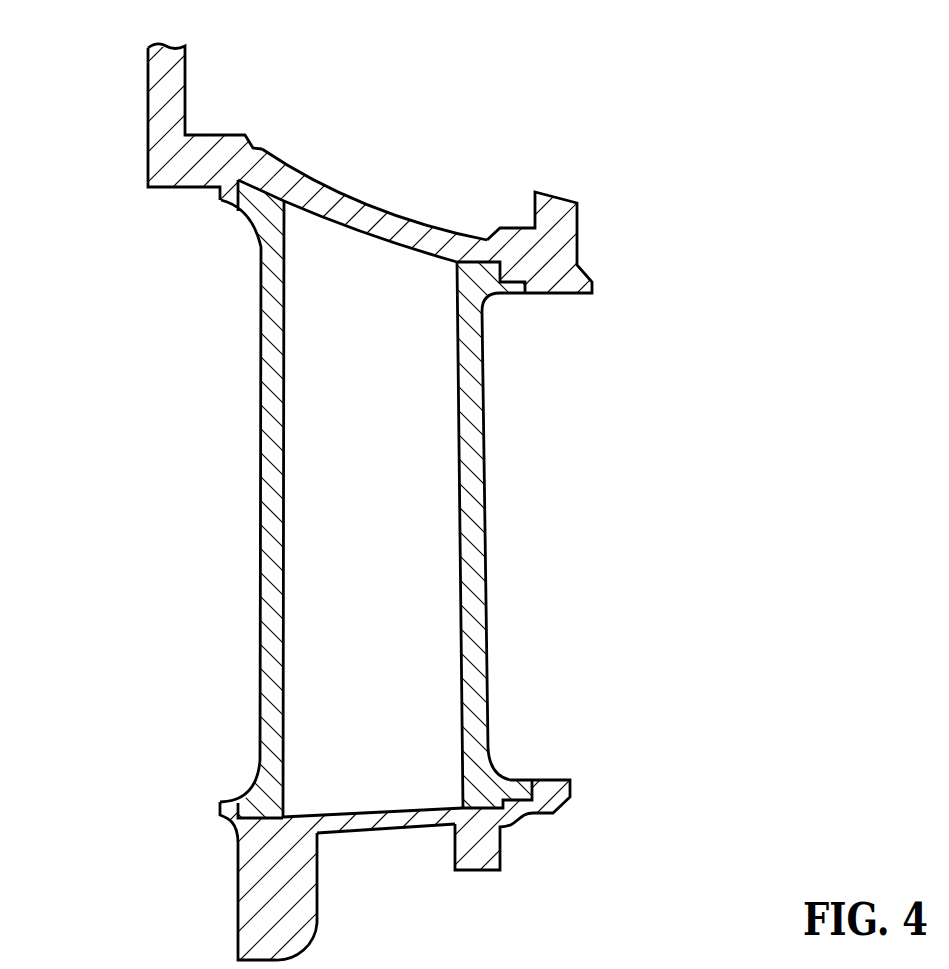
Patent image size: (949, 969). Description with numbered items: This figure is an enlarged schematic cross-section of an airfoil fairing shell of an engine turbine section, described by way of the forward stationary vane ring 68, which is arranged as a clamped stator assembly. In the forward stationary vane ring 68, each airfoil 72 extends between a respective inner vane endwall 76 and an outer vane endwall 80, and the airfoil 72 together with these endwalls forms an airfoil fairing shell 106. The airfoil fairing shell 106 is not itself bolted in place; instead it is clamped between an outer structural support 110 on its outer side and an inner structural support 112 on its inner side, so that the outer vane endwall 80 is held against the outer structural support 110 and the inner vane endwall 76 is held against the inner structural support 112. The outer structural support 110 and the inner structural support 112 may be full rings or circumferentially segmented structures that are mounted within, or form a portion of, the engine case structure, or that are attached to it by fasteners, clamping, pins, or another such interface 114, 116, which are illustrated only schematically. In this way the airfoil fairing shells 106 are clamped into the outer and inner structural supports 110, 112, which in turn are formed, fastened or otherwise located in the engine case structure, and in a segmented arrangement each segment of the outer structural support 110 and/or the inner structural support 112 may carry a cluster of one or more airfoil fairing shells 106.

The forward stationary vane ring 68 is at (474, 484).
The airfoil 72 is at (474, 484).
The inner vane endwall 76 is at (510, 780).
The outer vane endwall 80 is at (500, 287).
The airfoil fairing shell 106 is at (474, 484).
The outer structural support 110 is at (417, 228).
The inner structural support 112 is at (385, 820).
The interface 114 is at (178, 82).
The interface 116 is at (283, 917).